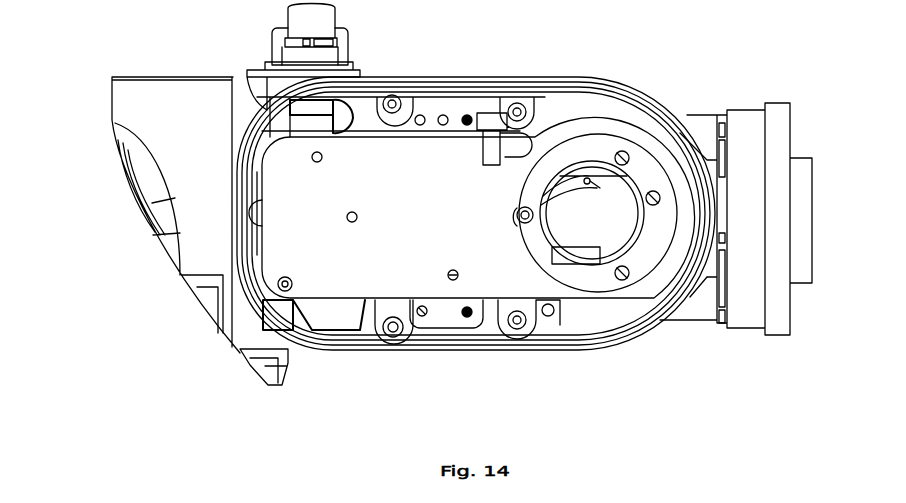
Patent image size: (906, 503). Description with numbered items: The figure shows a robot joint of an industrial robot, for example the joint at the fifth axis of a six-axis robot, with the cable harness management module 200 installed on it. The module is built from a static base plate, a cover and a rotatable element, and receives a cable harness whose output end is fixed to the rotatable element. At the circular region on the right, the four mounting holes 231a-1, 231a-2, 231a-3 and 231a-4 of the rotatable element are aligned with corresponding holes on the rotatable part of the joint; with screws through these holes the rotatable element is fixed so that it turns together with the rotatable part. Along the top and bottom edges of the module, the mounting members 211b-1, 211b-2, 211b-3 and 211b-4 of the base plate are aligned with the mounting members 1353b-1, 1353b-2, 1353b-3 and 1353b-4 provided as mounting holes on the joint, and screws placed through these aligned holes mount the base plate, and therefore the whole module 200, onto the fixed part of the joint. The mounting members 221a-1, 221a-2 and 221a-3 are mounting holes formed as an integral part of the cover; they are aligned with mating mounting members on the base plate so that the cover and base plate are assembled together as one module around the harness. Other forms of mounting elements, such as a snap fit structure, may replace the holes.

The cable harness management module 200 is at (428, 215).
The mounting member 1353b-1 is at (389, 96).
The mounting member 1353b-2 is at (524, 108).
The mounting member 1353b-3 is at (518, 331).
The mounting member 1353b-4 is at (392, 338).
The mounting member 221a-1 is at (420, 115).
The mounting member 221a-2 is at (551, 318).
The mounting member 221a-3 is at (292, 282).
The mounting member 211b-1 is at (443, 115).
The mounting member 211b-2 is at (469, 115).
The mounting member 211b-3 is at (467, 320).
The mounting member 211b-4 is at (420, 318).
The mounting hole 231a-1 is at (630, 154).
The mounting hole 231a-2 is at (648, 204).
The mounting hole 231a-3 is at (619, 278).
The mounting hole 231a-4 is at (524, 224).